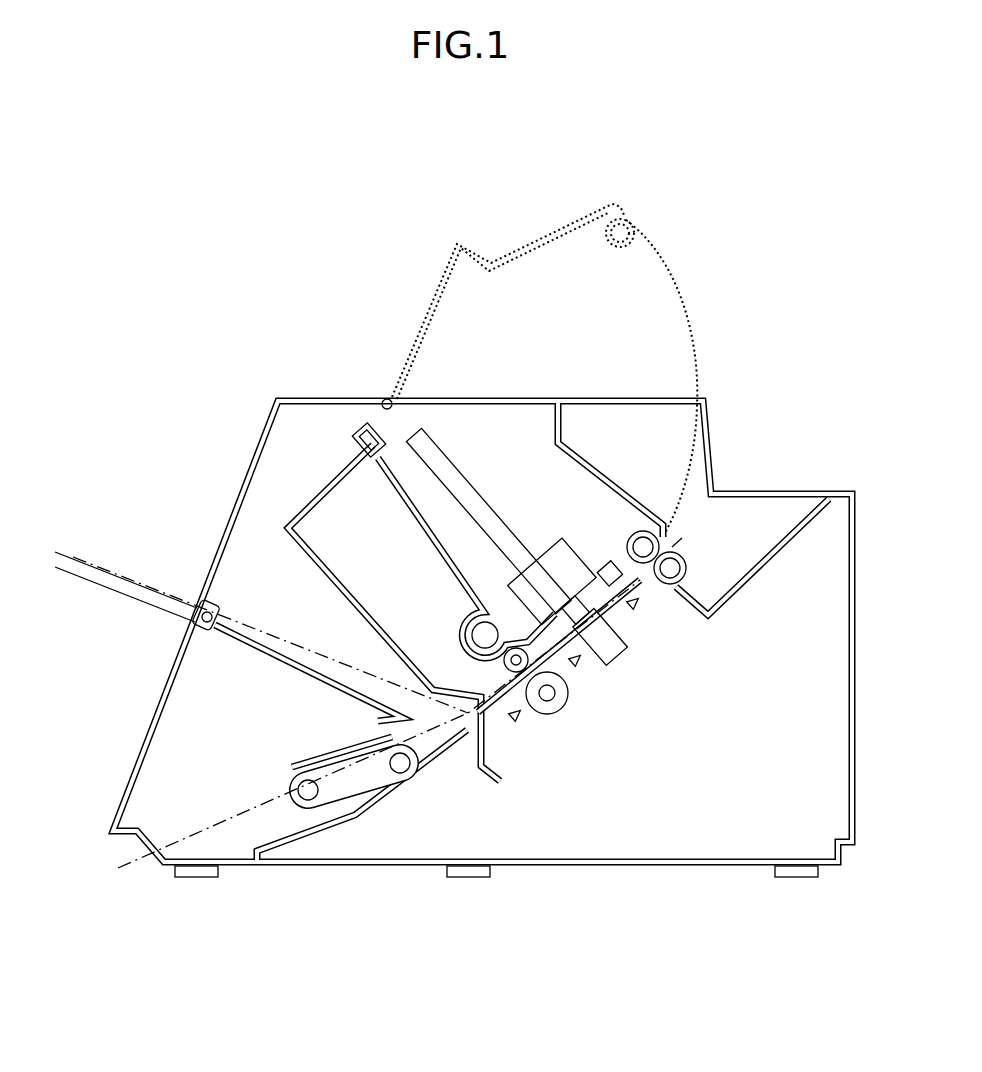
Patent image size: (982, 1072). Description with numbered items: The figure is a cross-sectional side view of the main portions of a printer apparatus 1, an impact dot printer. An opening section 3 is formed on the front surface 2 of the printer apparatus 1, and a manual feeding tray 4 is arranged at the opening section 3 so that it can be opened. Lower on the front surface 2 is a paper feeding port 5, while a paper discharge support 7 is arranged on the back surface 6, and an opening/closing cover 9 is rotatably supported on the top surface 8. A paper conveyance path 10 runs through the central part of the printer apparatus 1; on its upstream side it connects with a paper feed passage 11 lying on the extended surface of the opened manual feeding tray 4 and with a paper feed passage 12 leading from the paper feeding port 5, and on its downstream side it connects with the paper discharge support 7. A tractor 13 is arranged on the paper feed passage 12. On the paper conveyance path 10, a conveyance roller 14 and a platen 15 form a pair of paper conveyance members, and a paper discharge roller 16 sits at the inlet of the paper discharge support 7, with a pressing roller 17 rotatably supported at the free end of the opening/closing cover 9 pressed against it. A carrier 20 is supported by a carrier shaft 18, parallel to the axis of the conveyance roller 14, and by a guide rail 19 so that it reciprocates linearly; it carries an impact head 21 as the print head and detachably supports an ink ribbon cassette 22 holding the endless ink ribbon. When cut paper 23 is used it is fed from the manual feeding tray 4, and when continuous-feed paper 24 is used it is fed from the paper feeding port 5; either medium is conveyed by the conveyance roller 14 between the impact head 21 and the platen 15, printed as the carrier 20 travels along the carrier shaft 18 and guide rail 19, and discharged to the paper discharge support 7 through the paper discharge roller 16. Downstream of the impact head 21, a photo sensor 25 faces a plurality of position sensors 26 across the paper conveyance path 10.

The printer apparatus 1 is at (271, 400).
The front surface 2 is at (262, 418).
The opening section 3 is at (242, 487).
The manual feeding tray 4 is at (95, 588).
The paper feeding port 5 is at (148, 862).
The back surface 6 is at (730, 596).
The paper discharge support 7 is at (770, 518).
The top surface 8 is at (355, 397).
The opening/closing cover 9 is at (430, 322).
The paper conveyance path 10 is at (495, 742).
The paper feed passage 11 is at (275, 636).
The paper feed passage 12 is at (230, 793).
The tractor 13 is at (335, 782).
The conveyance roller 14 is at (574, 700).
The platen 15 is at (626, 655).
The paper discharge roller 16 is at (688, 552).
The pressing roller 17 is at (607, 236).
The carrier shaft 18 is at (472, 635).
The guide rail 19 is at (387, 440).
The carrier 20 is at (425, 527).
The impact head 21 is at (570, 567).
The ink ribbon cassette 22 is at (487, 500).
The cut paper 23 is at (76, 548).
The continuous-feed paper 24 is at (182, 830).
The photo sensor 25 is at (614, 560).
The position sensors 26 is at (640, 608).